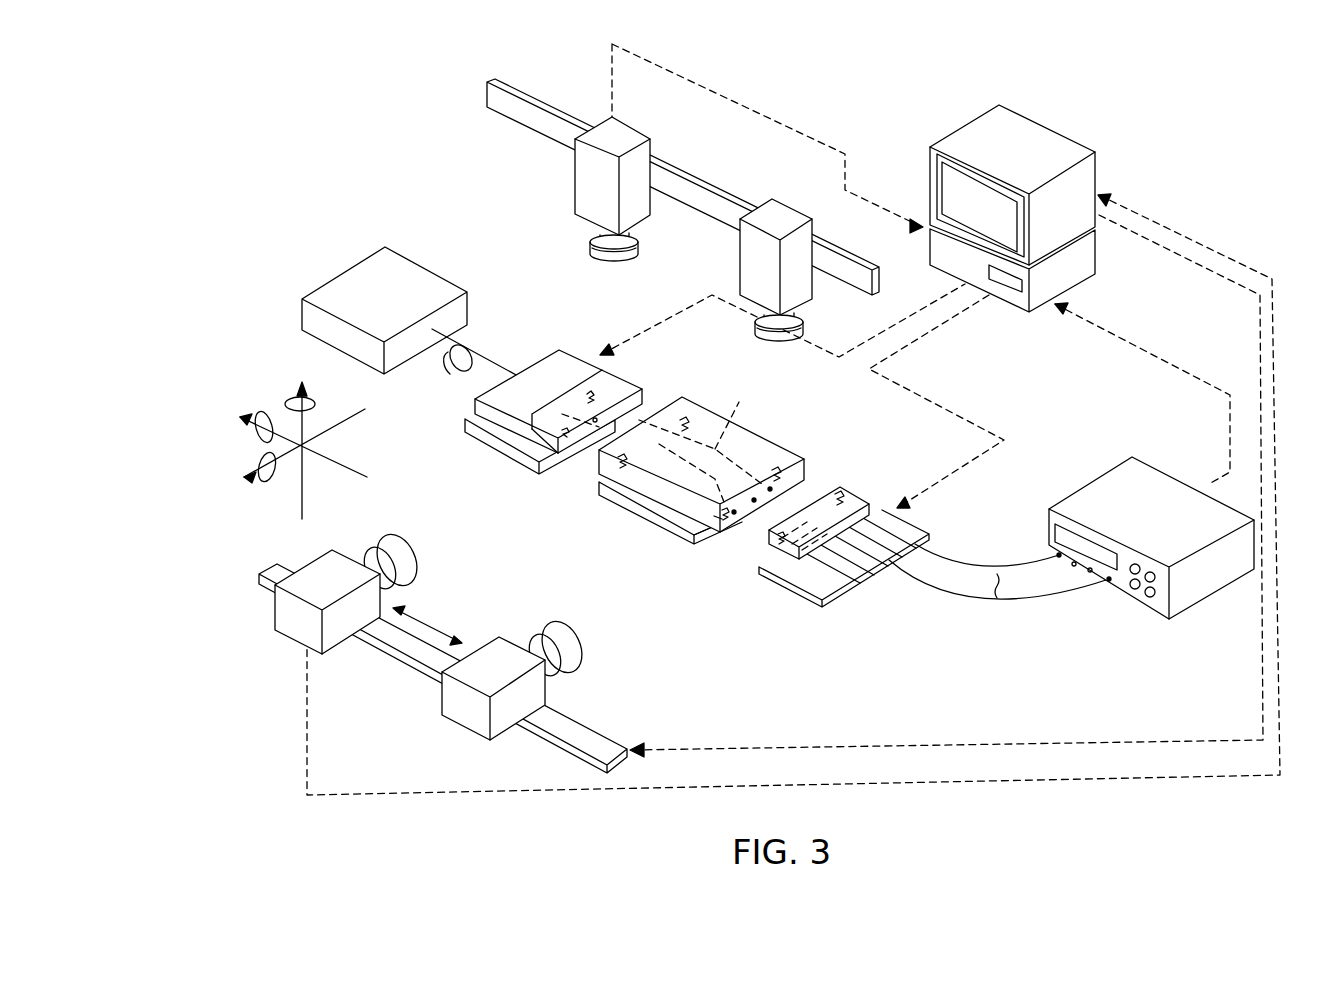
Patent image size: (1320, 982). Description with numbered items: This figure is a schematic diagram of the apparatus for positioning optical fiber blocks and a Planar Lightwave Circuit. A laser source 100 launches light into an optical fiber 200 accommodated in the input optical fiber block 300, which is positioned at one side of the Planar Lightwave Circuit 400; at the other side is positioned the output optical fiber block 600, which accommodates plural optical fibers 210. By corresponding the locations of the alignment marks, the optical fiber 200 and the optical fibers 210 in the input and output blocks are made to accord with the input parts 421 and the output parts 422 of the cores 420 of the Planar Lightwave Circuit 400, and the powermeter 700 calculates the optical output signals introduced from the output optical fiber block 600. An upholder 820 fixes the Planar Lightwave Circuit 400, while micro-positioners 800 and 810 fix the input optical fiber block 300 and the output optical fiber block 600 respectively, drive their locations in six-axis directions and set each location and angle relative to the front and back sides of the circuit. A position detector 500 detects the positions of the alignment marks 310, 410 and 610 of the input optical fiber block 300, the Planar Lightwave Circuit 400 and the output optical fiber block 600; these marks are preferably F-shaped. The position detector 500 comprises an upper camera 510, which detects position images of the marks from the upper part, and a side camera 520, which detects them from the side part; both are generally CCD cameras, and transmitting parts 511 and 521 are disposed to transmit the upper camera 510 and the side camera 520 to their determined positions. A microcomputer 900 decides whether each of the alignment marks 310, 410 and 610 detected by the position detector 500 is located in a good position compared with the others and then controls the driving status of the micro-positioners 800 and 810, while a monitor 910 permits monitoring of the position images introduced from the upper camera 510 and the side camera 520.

The laser source 100 is at (410, 250).
The optical fiber 200 is at (485, 368).
The optical fibers 210 is at (985, 610).
The input optical fiber block 300 is at (597, 352).
The alignment mark 310 is at (530, 456).
The Planar Lightwave Circuit 400 is at (701, 468).
The alignment mark 410 is at (692, 536).
The cores 420 is at (734, 413).
The input parts 421 is at (637, 418).
The output parts 422 is at (728, 512).
The position detector 500 is at (636, 204).
The upper camera 510 is at (573, 180).
The transmitting part 511 is at (698, 213).
The side camera 520 is at (345, 545).
The transmitting part 521 is at (398, 658).
The output optical fiber block 600 is at (905, 525).
The alignment mark 610 is at (782, 545).
The powermeter 700 is at (1115, 458).
The micro-positioner 800 is at (490, 448).
The micro-positioner 810 is at (812, 598).
The upholder 820 is at (648, 510).
The microcomputer 900 is at (1013, 313).
The monitor 910 is at (1035, 118).